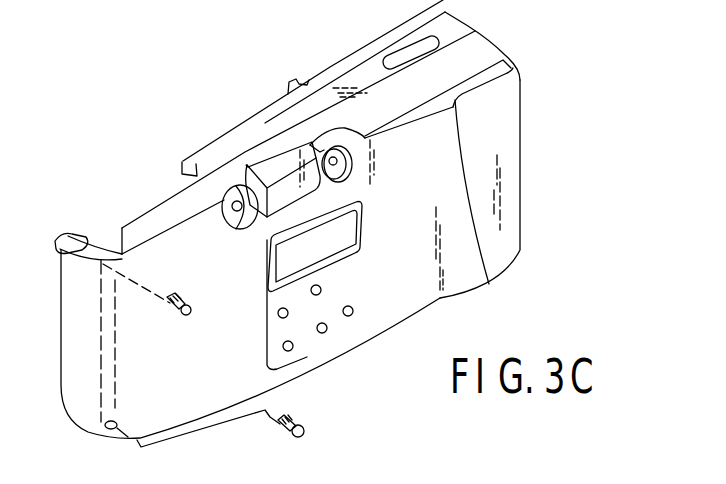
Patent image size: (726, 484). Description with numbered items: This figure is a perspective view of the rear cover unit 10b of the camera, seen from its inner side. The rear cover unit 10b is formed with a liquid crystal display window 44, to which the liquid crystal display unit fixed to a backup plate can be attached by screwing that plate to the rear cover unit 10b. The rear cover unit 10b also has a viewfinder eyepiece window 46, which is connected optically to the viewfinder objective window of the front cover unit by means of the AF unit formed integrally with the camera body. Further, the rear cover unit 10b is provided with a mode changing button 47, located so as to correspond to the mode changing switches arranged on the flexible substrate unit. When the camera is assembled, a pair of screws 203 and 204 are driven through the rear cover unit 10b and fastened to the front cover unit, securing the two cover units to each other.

The rear cover unit 10b is at (521, 193).
The mode changing button 47 is at (353, 52).
The viewfinder eyepiece window 46 is at (265, 225).
The liquid crystal display window 44 is at (348, 247).
The screw 203 is at (181, 315).
The screw 204 is at (300, 424).